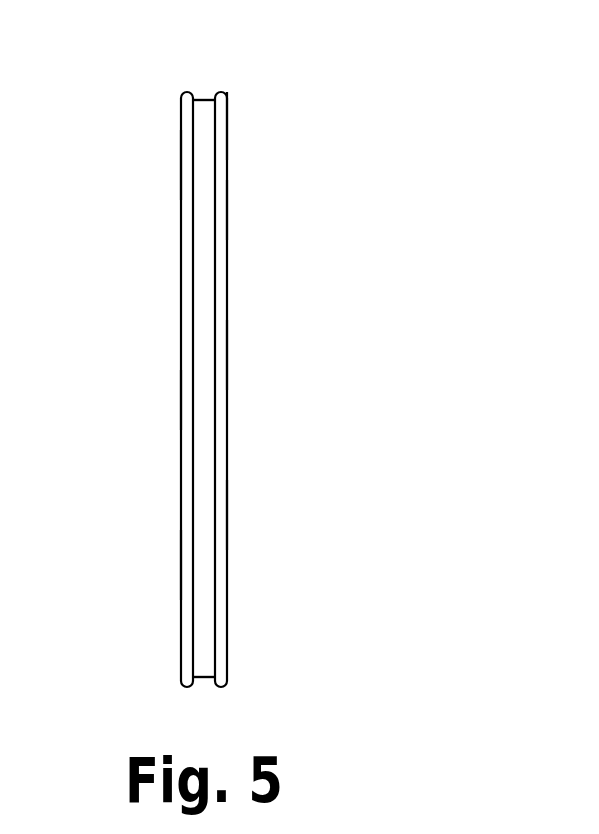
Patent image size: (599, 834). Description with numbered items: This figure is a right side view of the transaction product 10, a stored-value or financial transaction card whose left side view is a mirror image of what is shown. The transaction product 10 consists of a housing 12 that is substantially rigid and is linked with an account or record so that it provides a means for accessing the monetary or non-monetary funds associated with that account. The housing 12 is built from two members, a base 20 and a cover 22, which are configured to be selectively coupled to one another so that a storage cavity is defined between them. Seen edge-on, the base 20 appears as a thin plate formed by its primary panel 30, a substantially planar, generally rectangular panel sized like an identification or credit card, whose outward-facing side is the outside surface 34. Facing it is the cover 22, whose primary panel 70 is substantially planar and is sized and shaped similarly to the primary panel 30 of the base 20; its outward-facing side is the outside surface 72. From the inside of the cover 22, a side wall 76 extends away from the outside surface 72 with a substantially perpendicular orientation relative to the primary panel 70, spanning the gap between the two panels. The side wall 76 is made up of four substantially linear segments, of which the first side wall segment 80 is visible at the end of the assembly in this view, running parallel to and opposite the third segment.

The transaction product 10 is at (130, 60).
The housing 12 is at (238, 130).
The base 20 is at (245, 208).
The cover 22 is at (168, 165).
The primary panel 30 is at (228, 353).
The outside surface 34 is at (228, 513).
The primary panel 70 is at (187, 398).
The outside surface 72 is at (181, 560).
The side wall 76 is at (203, 665).
The first side wall segment 80 is at (203, 112).